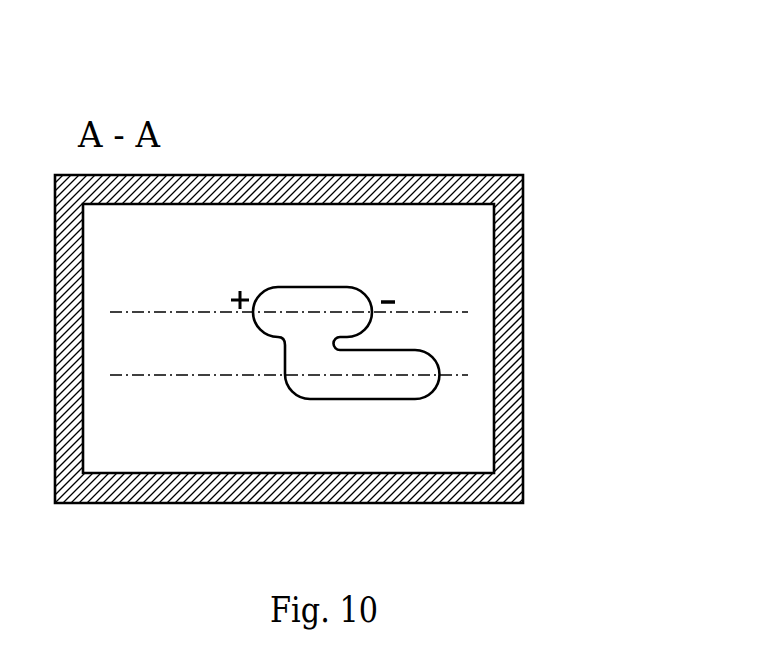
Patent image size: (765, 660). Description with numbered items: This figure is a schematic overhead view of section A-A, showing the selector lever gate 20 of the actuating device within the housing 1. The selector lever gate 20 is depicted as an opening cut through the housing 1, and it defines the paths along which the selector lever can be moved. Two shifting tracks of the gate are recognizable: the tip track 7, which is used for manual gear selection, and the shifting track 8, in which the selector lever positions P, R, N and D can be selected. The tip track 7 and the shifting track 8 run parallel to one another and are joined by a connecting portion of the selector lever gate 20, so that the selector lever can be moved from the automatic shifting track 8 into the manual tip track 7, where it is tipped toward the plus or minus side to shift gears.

The housing 1 is at (423, 132).
The selector lever gate 20 is at (468, 237).
The tip track 7 is at (197, 313).
The shifting track 8 is at (198, 375).